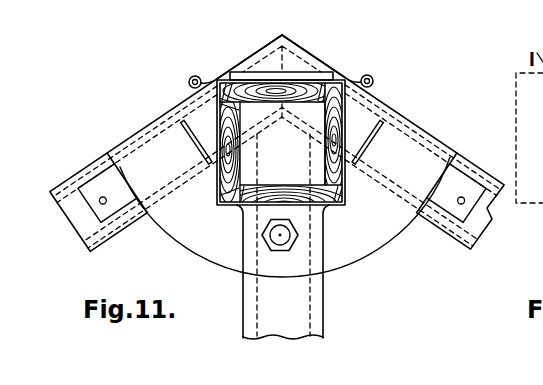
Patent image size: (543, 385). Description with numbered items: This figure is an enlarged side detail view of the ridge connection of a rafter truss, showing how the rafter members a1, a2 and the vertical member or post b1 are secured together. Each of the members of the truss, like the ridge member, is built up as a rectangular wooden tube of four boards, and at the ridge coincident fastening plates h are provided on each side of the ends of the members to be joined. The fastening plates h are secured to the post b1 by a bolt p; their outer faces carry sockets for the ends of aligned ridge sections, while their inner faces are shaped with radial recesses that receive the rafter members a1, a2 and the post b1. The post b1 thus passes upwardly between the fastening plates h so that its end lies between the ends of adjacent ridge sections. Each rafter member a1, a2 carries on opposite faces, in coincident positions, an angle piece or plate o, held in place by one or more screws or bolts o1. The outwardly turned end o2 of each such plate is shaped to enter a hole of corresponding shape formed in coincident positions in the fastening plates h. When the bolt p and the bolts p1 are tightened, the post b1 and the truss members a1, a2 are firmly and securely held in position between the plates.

The rafter member a1 is at (106, 242).
The rafter member a2 is at (470, 246).
The angle piece or plate o is at (106, 184).
The screw or bolt o1 is at (487, 160).
The outwardly turned end o2 is at (410, 101).
The bolt p1 is at (194, 76).
The bolt p is at (299, 234).
The fastening plate h is at (213, 255).
The vertical member or post b1 is at (324, 291).